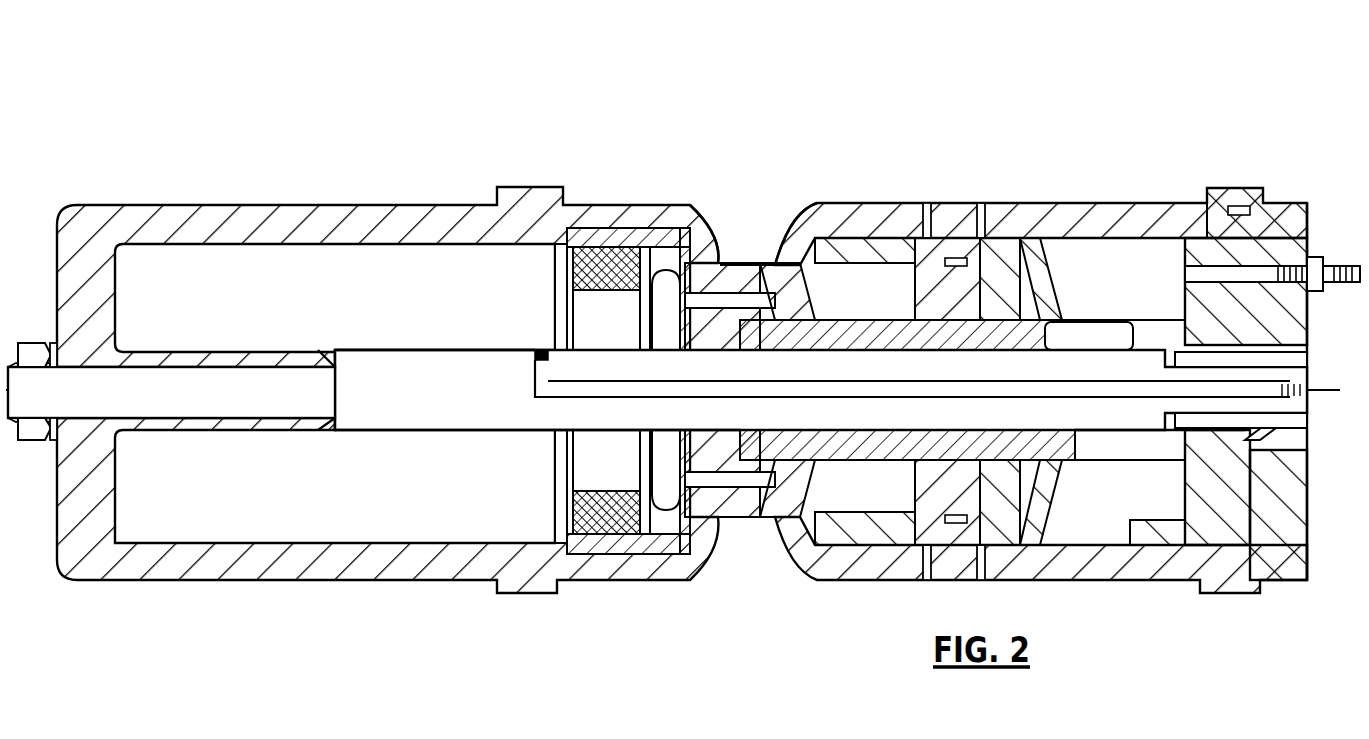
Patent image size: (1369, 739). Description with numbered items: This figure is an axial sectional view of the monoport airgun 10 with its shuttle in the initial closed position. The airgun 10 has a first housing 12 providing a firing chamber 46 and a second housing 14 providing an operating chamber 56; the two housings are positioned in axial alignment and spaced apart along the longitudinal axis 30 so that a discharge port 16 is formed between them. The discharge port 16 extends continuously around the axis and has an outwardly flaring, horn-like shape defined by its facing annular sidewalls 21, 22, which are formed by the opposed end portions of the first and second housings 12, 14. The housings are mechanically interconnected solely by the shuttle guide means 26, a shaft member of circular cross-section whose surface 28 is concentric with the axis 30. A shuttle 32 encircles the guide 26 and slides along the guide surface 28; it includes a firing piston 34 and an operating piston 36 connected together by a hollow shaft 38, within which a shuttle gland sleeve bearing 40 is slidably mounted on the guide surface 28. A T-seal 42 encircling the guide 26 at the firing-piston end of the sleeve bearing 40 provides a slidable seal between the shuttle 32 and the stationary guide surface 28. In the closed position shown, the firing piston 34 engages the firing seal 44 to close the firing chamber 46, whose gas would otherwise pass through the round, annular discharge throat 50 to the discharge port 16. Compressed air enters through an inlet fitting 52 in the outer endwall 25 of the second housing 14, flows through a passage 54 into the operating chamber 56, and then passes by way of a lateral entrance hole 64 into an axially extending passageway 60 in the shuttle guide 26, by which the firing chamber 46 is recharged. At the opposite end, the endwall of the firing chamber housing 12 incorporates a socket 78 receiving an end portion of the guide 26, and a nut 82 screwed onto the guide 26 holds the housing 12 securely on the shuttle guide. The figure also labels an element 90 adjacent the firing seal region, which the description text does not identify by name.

The monoport airgun 10 is at (284, 120).
The first housing 12 is at (379, 203).
The second housing 14 is at (1110, 201).
The discharge port 16 is at (748, 230).
The annular sidewall 21 is at (706, 218).
The annular sidewall 22 is at (790, 217).
The outer endwall 25 is at (1306, 205).
The shuttle guide means 26 is at (718, 349).
The guide surface 28 is at (893, 320).
The longitudinal axis 30 is at (188, 380).
The shuttle 32 is at (860, 466).
The firing piston 34 is at (824, 299).
The operating piston 36 is at (1064, 289).
The hollow shaft 38 is at (897, 460).
The shuttle gland sleeve bearing 40 is at (870, 349).
The T-seal 42 is at (760, 342).
The firing seal 44 is at (665, 292).
The firing chamber 46 is at (384, 292).
The discharge throat 50 is at (621, 471).
The inlet fitting 52 is at (1318, 289).
The passage 54 is at (1188, 268).
The operating chamber 56 is at (1106, 492).
The axially extending passageway 60 is at (1020, 396).
The lateral entrance hole 64 is at (1080, 352).
The socket 78 is at (268, 358).
The nut 82 is at (34, 343).
The separator plate 90 is at (553, 287).